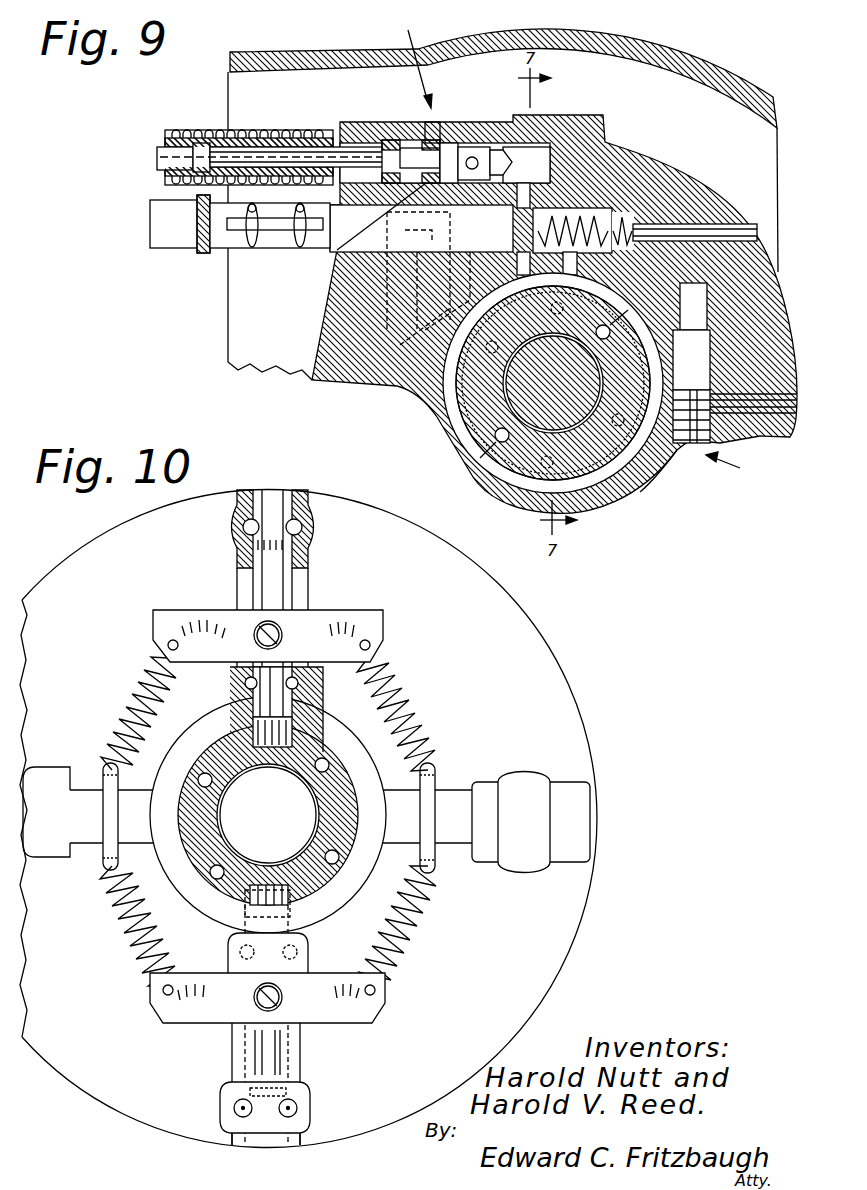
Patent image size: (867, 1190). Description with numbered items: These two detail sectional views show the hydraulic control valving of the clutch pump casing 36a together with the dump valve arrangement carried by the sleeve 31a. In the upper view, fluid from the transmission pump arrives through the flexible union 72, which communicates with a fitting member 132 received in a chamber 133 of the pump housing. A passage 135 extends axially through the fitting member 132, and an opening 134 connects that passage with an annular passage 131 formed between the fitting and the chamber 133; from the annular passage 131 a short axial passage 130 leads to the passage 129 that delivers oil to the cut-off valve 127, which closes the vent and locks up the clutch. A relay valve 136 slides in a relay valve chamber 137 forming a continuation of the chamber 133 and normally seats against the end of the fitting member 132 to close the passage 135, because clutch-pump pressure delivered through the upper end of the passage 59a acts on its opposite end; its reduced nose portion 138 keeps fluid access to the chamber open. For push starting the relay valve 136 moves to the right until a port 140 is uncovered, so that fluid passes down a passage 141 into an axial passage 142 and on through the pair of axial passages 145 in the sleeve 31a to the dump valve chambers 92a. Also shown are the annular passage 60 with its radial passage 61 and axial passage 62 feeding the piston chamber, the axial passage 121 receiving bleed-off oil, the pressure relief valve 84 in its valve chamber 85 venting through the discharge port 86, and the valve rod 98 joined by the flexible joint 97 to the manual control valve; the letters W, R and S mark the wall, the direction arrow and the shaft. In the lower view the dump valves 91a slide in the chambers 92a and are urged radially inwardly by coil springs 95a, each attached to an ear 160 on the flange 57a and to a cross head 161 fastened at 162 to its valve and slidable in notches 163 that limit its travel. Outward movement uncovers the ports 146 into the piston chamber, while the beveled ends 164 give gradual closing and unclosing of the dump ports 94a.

In FIG. 9, the wall thickness / arrow indicator W is at (411, 59).
In FIG. 9, the short axial passage 130 is at (445, 55).
In FIG. 9, the clutch pump casing 36a is at (320, 338).
In FIG. 9, the annular passage 131 is at (337, 250).
In FIG. 9, the passage 129 is at (424, 255).
In FIG. 9, the passage 141 is at (421, 291).
In FIG. 9, the axial passage 142 is at (449, 286).
In FIG. 9, the cut-off valve 127 is at (400, 342).
In FIG. 9, the flexible union 72 is at (262, 150).
In FIG. 9, the chamber 133 is at (382, 140).
In FIG. 9, the fitting member 132 is at (402, 146).
In FIG. 9, the opening 134 is at (425, 118).
In FIG. 9, the passage 135 is at (447, 143).
In FIG. 9, the relay valve 136 is at (468, 145).
In FIG. 9, the port 140 is at (473, 157).
In FIG. 9, the relay valve chamber 137 is at (540, 200).
In FIG. 9, the reduced nose portion 138 is at (515, 160).
In FIG. 9, the passage 59a is at (545, 210).
In FIG. 9, the valve rod 98 is at (172, 243).
In FIG. 9, the flexible joint 97 is at (268, 248).
In FIG. 9, the axial passages 145 is at (610, 290).
In FIG. 10, the axial passages 145 is at (292, 900).
In FIG. 9, the sleeve 31a is at (540, 430).
In FIG. 10, the sleeve 31a is at (355, 845).
In FIG. 9, the axial passage 62 is at (455, 477).
In FIG. 10, the axial passage 62 is at (328, 759).
In FIG. 9, the axial passage 121 is at (488, 352).
In FIG. 10, the axial passage 121 is at (205, 772).
In FIG. 9, the radial passage 61 is at (494, 440).
In FIG. 9, the annular passage 60 is at (628, 478).
In FIG. 9, the shaft S is at (597, 465).
In FIG. 10, the shaft S is at (268, 815).
In FIG. 9, the valve chamber 85 is at (680, 446).
In FIG. 9, the pressure relief valve 84 is at (690, 444).
In FIG. 9, the discharge port 86 is at (782, 414).
In FIG. 9, the direction arrow R is at (732, 463).
In FIG. 10, the flange 57a is at (308, 819).
In FIG. 10, the ear 160 is at (103, 768).
In FIG. 10, the coil springs 95a is at (135, 705).
In FIG. 10, the dump valves 91a is at (292, 592).
In FIG. 10, the notches 163 is at (237, 592).
In FIG. 10, the dump valve chambers 92a is at (278, 492).
In FIG. 10, the dump ports 94a is at (243, 527).
In FIG. 10, the bevel 164 is at (312, 540).
In FIG. 10, the ports 146 is at (244, 683).
In FIG. 10, the cross head 161 is at (383, 632).
In FIG. 10, the attachment 162 is at (283, 633).